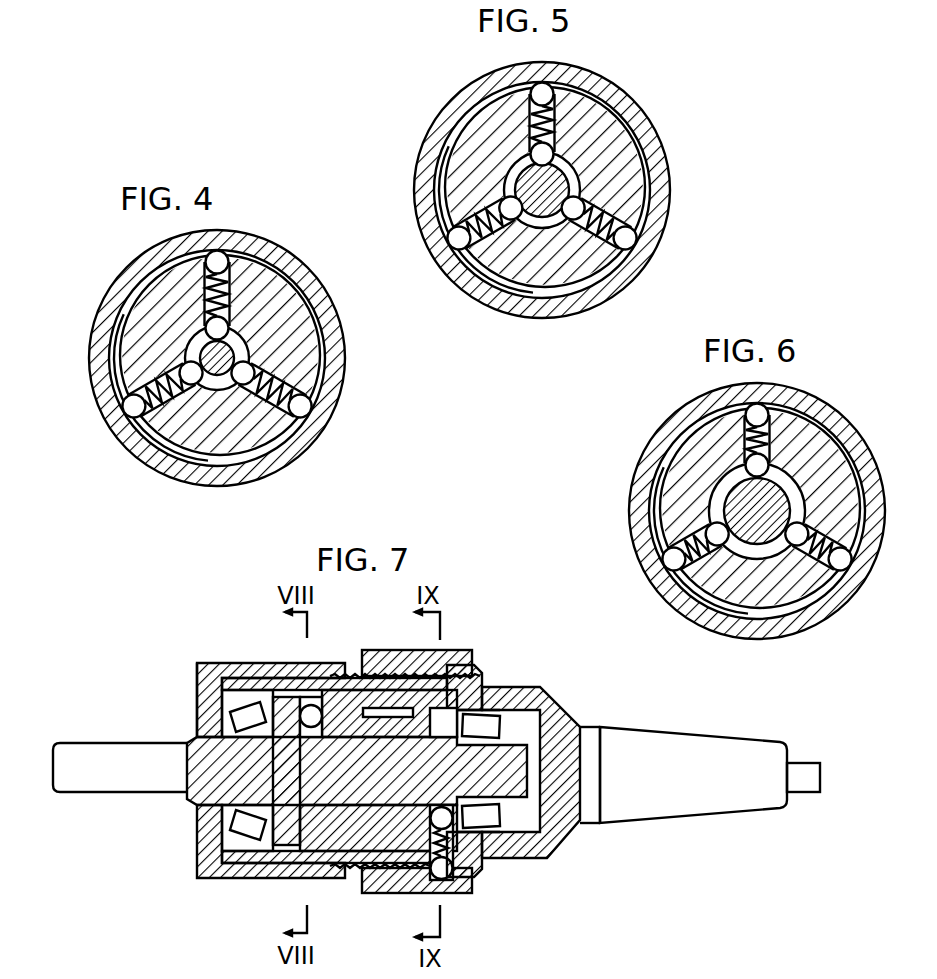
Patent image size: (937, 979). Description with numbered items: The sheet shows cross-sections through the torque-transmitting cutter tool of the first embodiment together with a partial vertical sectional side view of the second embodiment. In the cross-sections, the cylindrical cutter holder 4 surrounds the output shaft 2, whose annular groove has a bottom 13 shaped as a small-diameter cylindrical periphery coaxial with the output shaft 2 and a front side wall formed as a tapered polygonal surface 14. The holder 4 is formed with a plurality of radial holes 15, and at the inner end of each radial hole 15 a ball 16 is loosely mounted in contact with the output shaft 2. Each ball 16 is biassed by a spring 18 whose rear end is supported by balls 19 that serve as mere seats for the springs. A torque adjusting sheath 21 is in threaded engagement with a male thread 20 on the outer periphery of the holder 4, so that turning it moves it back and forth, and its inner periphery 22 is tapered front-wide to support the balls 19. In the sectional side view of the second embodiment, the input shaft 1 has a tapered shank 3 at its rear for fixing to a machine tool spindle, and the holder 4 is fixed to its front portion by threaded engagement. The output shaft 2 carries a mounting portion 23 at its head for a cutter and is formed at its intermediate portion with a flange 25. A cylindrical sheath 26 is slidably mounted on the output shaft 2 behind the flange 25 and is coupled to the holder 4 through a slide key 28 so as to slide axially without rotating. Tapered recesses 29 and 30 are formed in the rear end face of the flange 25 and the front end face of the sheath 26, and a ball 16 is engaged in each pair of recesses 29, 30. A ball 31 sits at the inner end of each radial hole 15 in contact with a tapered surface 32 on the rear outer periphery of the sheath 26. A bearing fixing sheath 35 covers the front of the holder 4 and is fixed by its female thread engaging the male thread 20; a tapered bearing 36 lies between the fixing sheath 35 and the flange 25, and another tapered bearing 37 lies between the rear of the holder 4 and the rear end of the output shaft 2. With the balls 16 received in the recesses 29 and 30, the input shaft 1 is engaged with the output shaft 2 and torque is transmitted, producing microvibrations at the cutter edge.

In FIG. 7, the input shaft 1 is at (572, 732).
In FIG. 4, the output shaft 2 is at (212, 378).
In FIG. 5, the output shaft 2 is at (552, 223).
In FIG. 6, the output shaft 2 is at (705, 620).
In FIG. 7, the output shaft 2 is at (200, 780).
In FIG. 7, the tapered shank 3 is at (722, 738).
In FIG. 4, the cylindrical cutter holder 4 is at (160, 423).
In FIG. 5, the cylindrical cutter holder 4 is at (502, 130).
In FIG. 6, the cylindrical cutter holder 4 is at (837, 477).
In FIG. 7, the cylindrical cutter holder 4 is at (262, 864).
In FIG. 4, the bottom of annular groove 13 is at (187, 353).
In FIG. 5, the tapered polygonal surface 14 is at (517, 185).
In FIG. 7, the radial holes 15 is at (492, 858).
In FIG. 4, the ball 16 is at (250, 364).
In FIG. 5, the ball 16 is at (502, 194).
In FIG. 6, the ball 16 is at (756, 502).
In FIG. 7, the ball 16 is at (305, 704).
In FIG. 4, the spring 18 is at (243, 278).
In FIG. 5, the spring 18 is at (583, 197).
In FIG. 6, the spring 18 is at (740, 442).
In FIG. 7, the spring 18 is at (452, 872).
In FIG. 4, the balls 19 is at (130, 412).
In FIG. 5, the balls 19 is at (632, 244).
In FIG. 6, the balls 19 is at (662, 557).
In FIG. 7, the balls 19 is at (447, 875).
In FIG. 7, the male thread 20 is at (355, 860).
In FIG. 4, the torque adjusting sheath 21 is at (307, 282).
In FIG. 5, the torque adjusting sheath 21 is at (597, 83).
In FIG. 6, the torque adjusting sheath 21 is at (838, 428).
In FIG. 7, the torque adjusting sheath 21 is at (452, 663).
In FIG. 4, the inner periphery 22 is at (161, 387).
In FIG. 5, the inner periphery 22 is at (490, 273).
In FIG. 6, the inner periphery 22 is at (701, 540).
In FIG. 7, the inner periphery 22 is at (430, 678).
In FIG. 7, the mounting portion 23 is at (107, 747).
In FIG. 7, the flange 25 is at (225, 878).
In FIG. 7, the cylindrical sheath 26 is at (288, 880).
In FIG. 7, the slide key 28 is at (386, 708).
In FIG. 7, the tapered recesses 29 is at (290, 692).
In FIG. 7, the tapered recesses 30 is at (340, 672).
In FIG. 7, the ball 31 is at (405, 868).
In FIG. 7, the tapered surface 32 is at (513, 688).
In FIG. 7, the bearing fixing sheath 35 is at (197, 667).
In FIG. 7, the tapered bearing 36 is at (222, 715).
In FIG. 7, the tapered bearing 37 is at (500, 822).